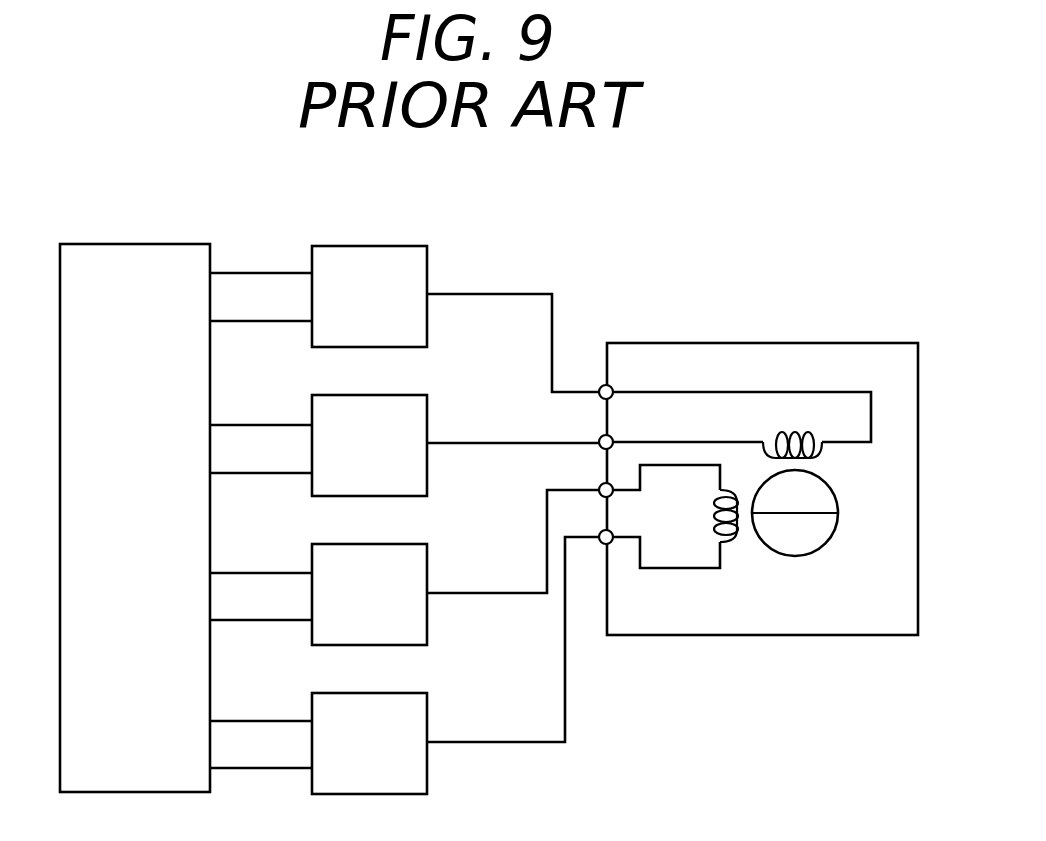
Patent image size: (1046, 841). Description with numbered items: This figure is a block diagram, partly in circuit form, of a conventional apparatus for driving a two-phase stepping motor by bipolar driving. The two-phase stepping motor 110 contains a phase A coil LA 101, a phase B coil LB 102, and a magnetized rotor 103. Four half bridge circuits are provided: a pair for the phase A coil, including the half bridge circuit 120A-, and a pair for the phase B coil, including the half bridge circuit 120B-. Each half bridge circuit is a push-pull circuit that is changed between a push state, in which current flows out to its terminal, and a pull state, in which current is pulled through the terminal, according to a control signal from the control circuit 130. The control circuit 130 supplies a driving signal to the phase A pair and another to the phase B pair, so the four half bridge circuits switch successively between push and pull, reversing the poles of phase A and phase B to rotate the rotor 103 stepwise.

The control circuit 130 is at (177, 243).
The half bridge circuit 120A- is at (430, 410).
The half bridge circuit 120B- is at (430, 708).
The two-phase stepping motor 110 is at (743, 465).
The coil LA 101 is at (772, 432).
The coil LB 102 is at (727, 545).
The magnetized rotor 103 is at (838, 492).